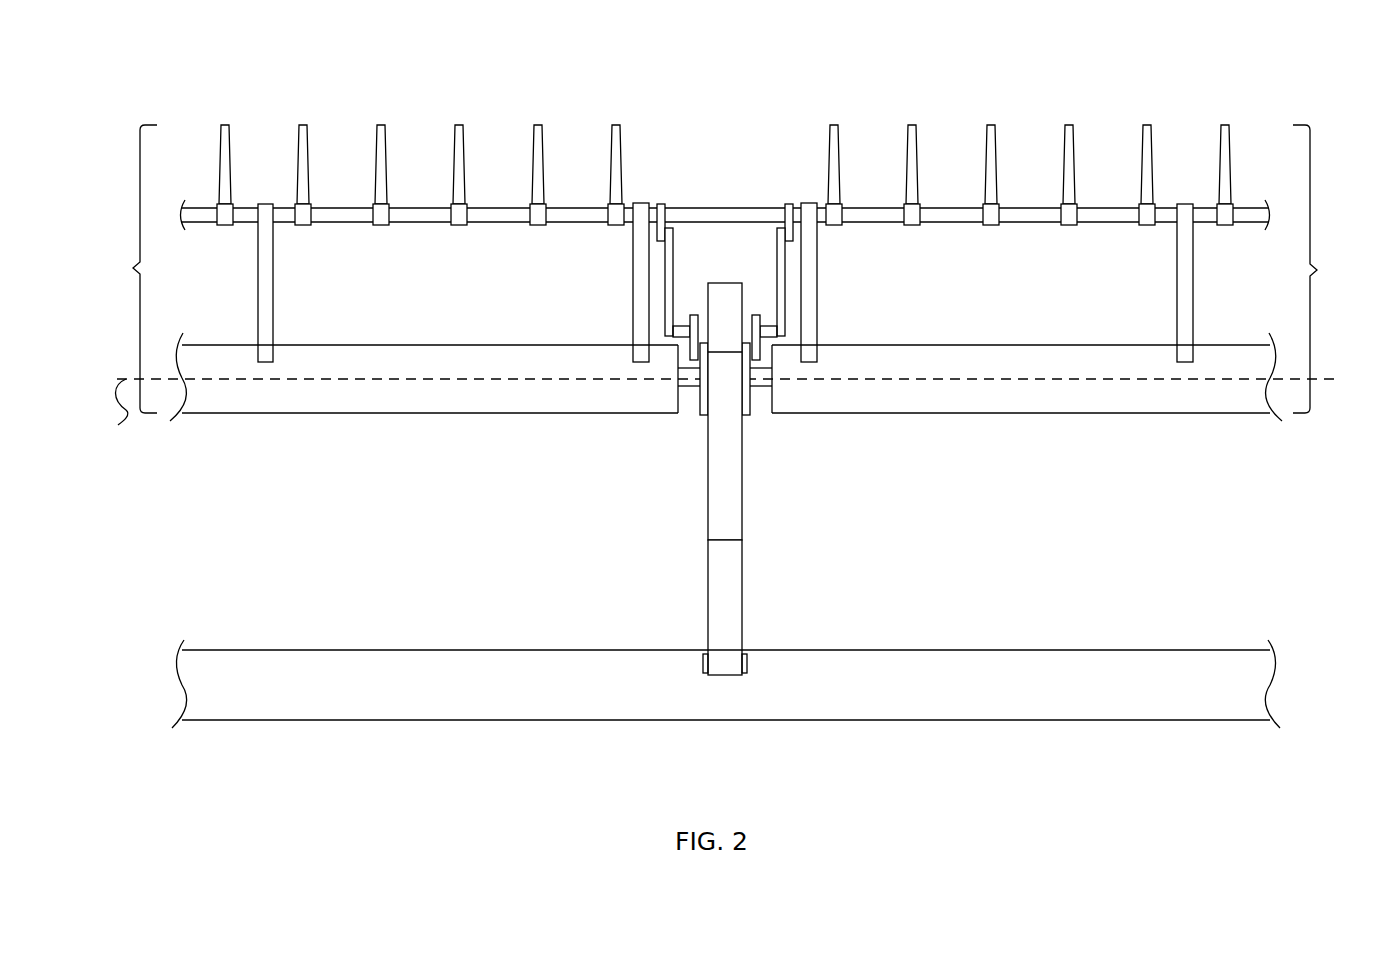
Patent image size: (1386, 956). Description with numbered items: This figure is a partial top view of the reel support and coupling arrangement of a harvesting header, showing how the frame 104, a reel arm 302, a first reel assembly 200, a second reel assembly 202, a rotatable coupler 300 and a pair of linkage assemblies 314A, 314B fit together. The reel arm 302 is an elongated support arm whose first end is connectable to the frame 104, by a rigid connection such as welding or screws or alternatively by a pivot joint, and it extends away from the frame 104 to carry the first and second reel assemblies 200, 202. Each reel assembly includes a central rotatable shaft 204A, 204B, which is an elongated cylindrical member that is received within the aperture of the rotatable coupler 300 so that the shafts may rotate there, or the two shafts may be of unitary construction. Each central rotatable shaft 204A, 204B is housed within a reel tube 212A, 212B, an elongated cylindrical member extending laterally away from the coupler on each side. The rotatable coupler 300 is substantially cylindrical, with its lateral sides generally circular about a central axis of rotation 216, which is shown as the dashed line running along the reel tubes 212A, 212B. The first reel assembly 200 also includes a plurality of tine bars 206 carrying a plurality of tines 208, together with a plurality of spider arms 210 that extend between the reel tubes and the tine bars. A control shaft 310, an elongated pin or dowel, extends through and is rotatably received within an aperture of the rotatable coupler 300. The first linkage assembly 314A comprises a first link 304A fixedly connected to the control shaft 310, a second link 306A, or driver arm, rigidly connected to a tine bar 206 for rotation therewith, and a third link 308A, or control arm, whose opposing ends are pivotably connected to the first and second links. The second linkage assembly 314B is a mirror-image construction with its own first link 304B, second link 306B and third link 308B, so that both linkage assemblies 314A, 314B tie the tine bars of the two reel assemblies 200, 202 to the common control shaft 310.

The frame 104 is at (858, 722).
The first reel assembly 200 is at (1329, 269).
The second reel assembly 202 is at (122, 269).
The central rotatable shaft 204A is at (762, 388).
The central rotatable shaft 204B is at (690, 387).
The tine bar 206 is at (192, 206).
The tine 208 is at (1229, 123).
The spider arm 210 is at (633, 328).
The reel tube 212A is at (1005, 413).
The reel tube 212B is at (370, 413).
The central axis of rotation 216 is at (114, 416).
The rotatable coupler 300 is at (742, 403).
The reel arm 302 is at (742, 618).
The first link 304A is at (765, 358).
The first link 304B is at (687, 345).
The second link 306A is at (784, 200).
The second link 306B is at (664, 200).
The third link 308A is at (769, 276).
The third link 308B is at (680, 236).
The control shaft 310 is at (753, 353).
The first linkage assembly 314A is at (747, 162).
The second linkage assembly 314B is at (698, 163).